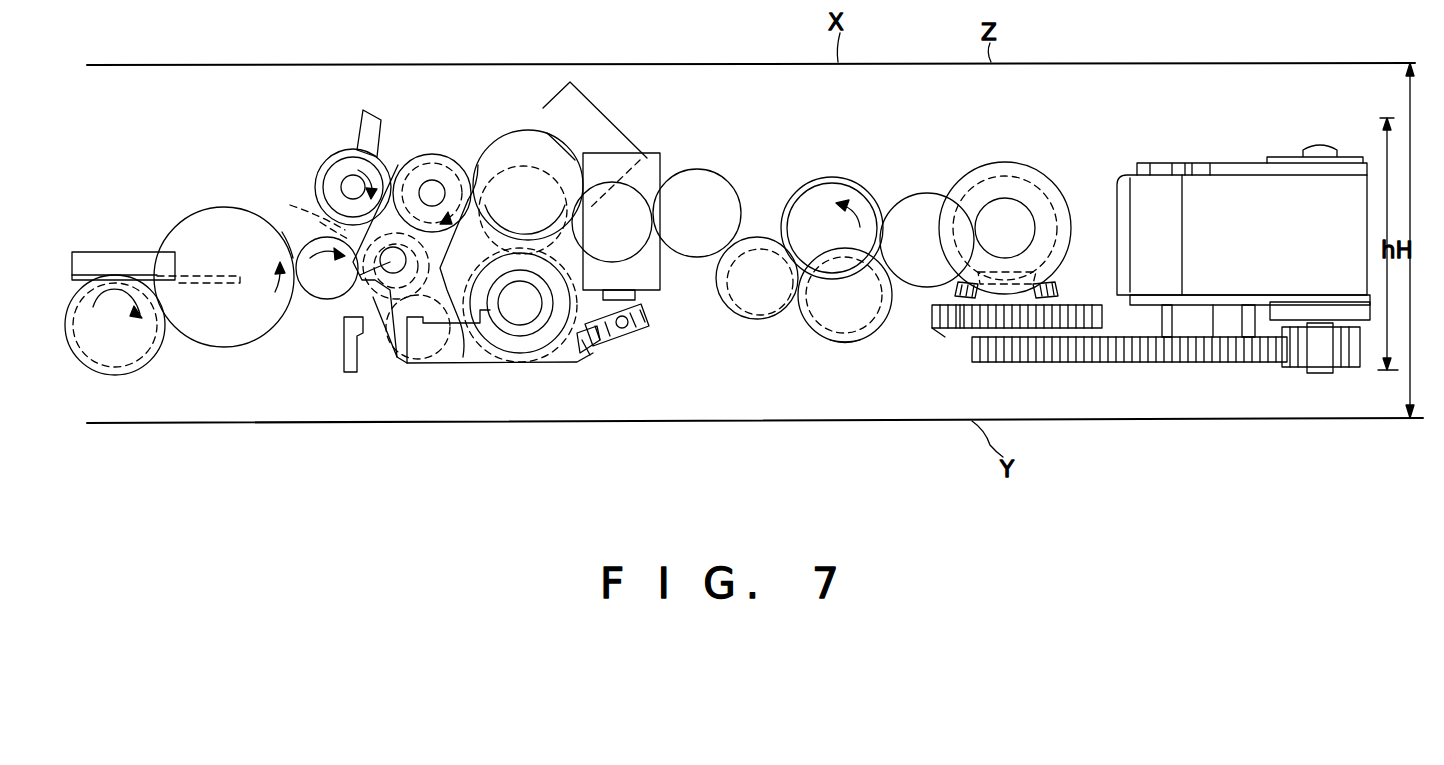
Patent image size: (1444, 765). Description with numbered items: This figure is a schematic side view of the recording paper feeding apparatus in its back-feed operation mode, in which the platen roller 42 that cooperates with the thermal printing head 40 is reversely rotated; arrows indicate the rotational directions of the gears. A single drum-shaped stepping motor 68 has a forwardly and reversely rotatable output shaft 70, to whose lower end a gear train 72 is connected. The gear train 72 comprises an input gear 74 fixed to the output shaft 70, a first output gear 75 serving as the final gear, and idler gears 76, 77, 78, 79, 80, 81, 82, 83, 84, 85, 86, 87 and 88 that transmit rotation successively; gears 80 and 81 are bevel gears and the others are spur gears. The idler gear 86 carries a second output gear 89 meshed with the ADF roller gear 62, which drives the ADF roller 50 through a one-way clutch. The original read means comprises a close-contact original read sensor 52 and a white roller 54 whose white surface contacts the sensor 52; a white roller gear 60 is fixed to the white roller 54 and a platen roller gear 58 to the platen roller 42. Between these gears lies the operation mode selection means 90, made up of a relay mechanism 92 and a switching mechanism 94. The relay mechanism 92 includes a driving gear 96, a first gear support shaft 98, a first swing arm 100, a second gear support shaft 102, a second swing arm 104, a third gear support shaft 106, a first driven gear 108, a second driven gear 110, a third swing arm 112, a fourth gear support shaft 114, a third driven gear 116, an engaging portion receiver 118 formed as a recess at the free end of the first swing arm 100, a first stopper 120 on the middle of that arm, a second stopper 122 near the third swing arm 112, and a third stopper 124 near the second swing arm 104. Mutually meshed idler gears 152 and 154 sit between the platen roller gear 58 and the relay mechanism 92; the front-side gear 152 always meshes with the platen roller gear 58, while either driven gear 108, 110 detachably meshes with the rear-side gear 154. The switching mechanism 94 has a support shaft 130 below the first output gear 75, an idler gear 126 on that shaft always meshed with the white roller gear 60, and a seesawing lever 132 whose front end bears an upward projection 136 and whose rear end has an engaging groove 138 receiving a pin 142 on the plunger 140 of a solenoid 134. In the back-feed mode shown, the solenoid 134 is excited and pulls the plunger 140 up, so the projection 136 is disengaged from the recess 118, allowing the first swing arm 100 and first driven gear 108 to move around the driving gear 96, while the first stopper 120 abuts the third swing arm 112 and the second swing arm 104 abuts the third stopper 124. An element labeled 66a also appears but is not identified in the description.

The thermal printing head 40 is at (127, 252).
The platen roller 42 is at (100, 372).
The platen roller gear 58 is at (135, 372).
The front-side idler gear 152 is at (222, 347).
The rear-side idler gear 154 is at (295, 243).
The second gear support shaft 102 is at (314, 297).
The second swing arm 104 is at (317, 170).
The third gear support shaft 106 is at (343, 152).
The first driven gear 108 is at (320, 222).
The second driven gear 110 is at (347, 173).
The third stopper 124 is at (358, 125).
The first swing arm 100 is at (408, 148).
The relay mechanism 92 is at (413, 148).
The first gear support shaft 98 is at (432, 178).
The driving gear 96 is at (452, 173).
The white roller gear 60 is at (478, 153).
The white roller 54 is at (505, 165).
The first output gear 75 is at (547, 133).
The original read sensor 52 is at (587, 100).
The first stopper 120 is at (523, 210).
The solenoid 134 is at (617, 167).
The idler gear 88 is at (632, 202).
The idler gear 87 is at (717, 183).
The plunger 140 is at (628, 288).
The pin 142 is at (630, 320).
The switching mechanism 94 is at (627, 353).
The engaging groove 138 is at (595, 360).
The support shaft 130 is at (517, 317).
The idler gear 126 is at (553, 367).
The lever 132 is at (437, 368).
The third swing arm 112 is at (462, 365).
The fourth gear support shaft 114 is at (408, 367).
The upward projection 136 is at (400, 367).
The operation mode selection means 90 is at (397, 367).
The third driven gear 116 is at (385, 300).
The engaging portion receiver 118 is at (385, 262).
The second stopper 122 is at (345, 345).
The idler gear 86 is at (748, 298).
The second output gear 89 is at (777, 313).
The idler gear 85 is at (820, 340).
The idler gear 84 is at (867, 320).
The stopper 66a is at (847, 346).
The ADF roller gear 62 is at (810, 198).
The ADF roller 50 is at (858, 180).
The idler gear 83 is at (922, 200).
The idler gear 82 is at (998, 203).
The bevel idler gear 81 is at (1050, 193).
The bevel idler gear 80 is at (1062, 262).
The idler gear 78 is at (1080, 313).
The gear train 72 is at (927, 328).
The idler gear 79 is at (962, 330).
The idler gear 77 is at (1077, 357).
The idler gear 76 is at (1177, 353).
The input gear 74 is at (1303, 367).
The motor 68 is at (1233, 192).
The output shaft 70 is at (1312, 300).